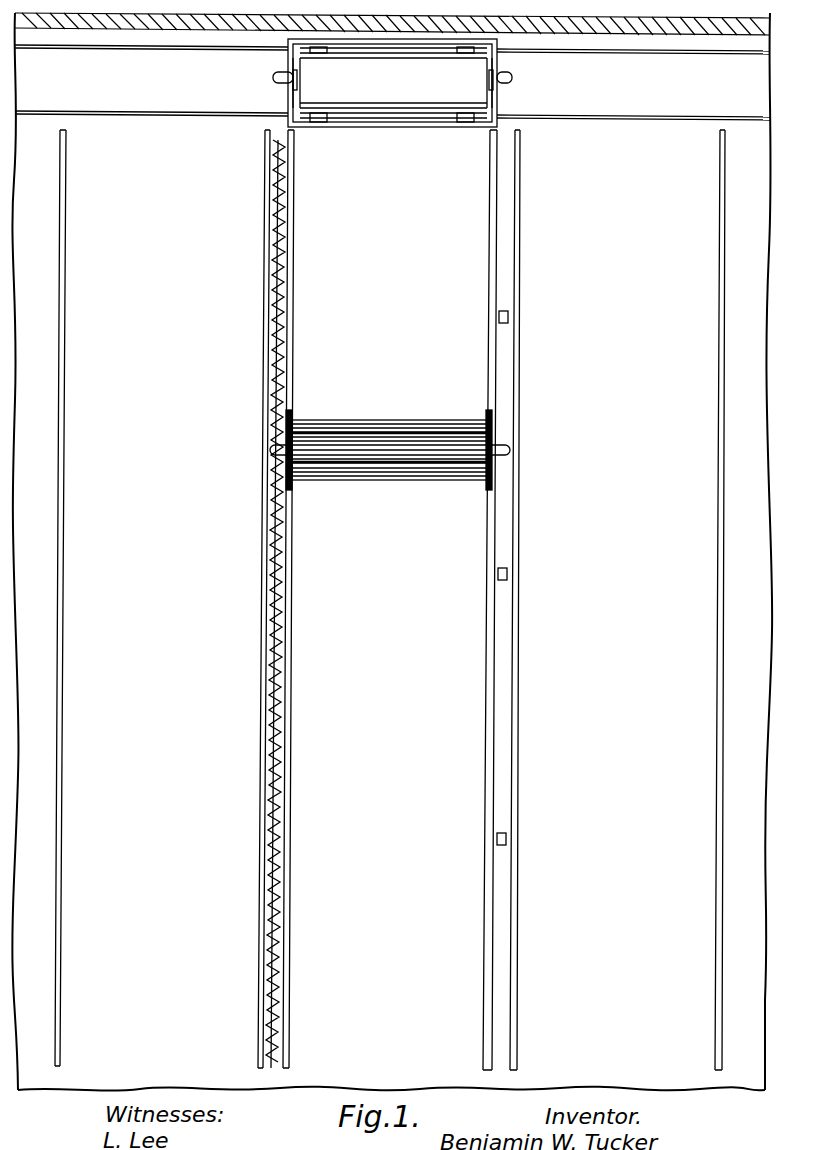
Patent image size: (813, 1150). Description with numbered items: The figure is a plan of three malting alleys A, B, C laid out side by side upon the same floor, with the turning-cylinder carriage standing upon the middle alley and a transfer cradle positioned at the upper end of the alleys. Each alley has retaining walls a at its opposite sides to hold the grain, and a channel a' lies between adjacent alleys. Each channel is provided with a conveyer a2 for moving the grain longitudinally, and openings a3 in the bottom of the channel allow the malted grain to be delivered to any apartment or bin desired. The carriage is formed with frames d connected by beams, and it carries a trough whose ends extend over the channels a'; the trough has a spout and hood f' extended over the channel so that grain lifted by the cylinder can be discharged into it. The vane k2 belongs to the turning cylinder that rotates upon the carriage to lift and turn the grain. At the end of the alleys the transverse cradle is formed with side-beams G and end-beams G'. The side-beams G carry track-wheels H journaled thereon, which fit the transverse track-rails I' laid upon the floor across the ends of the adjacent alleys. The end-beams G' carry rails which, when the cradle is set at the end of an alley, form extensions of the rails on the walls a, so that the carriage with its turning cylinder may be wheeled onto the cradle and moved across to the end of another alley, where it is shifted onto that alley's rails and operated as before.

The transverse track-rails I' is at (392, 82).
The side-beams G is at (392, 83).
The track-wheels H is at (313, 48).
The end-beams G' is at (407, 97).
The retaining walls a is at (390, 600).
The channel a' is at (389, 266).
The conveyers a2 is at (265, 748).
The openings a3 is at (509, 318).
The vane k2 is at (373, 420).
The spout and hood f' is at (386, 458).
The frames d is at (289, 412).
The malting alley A is at (160, 946).
The malting alley B is at (385, 949).
The malting alley C is at (611, 946).